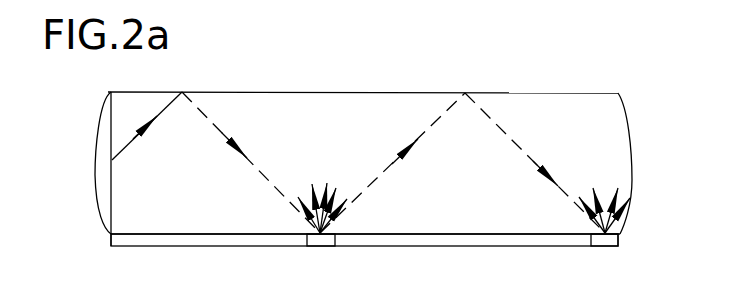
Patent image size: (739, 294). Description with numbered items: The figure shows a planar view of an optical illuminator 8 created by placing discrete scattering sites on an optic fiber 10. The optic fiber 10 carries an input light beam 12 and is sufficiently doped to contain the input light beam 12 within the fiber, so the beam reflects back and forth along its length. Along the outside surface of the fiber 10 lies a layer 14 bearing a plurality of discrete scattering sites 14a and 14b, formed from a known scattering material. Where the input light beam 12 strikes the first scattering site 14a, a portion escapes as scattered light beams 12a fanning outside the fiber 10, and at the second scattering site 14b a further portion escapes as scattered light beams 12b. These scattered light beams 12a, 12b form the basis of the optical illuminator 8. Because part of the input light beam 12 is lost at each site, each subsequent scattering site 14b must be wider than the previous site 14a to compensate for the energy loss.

The optical illuminator 8 is at (340, 93).
The optic fiber 10 is at (603, 113).
The input light beam 12 is at (223, 133).
The scattered light beam 12a is at (322, 196).
The scattered light beam 12b is at (604, 195).
The reflective layer 14 is at (128, 240).
The scattering site 14a is at (320, 248).
The scattering site 14b is at (607, 248).